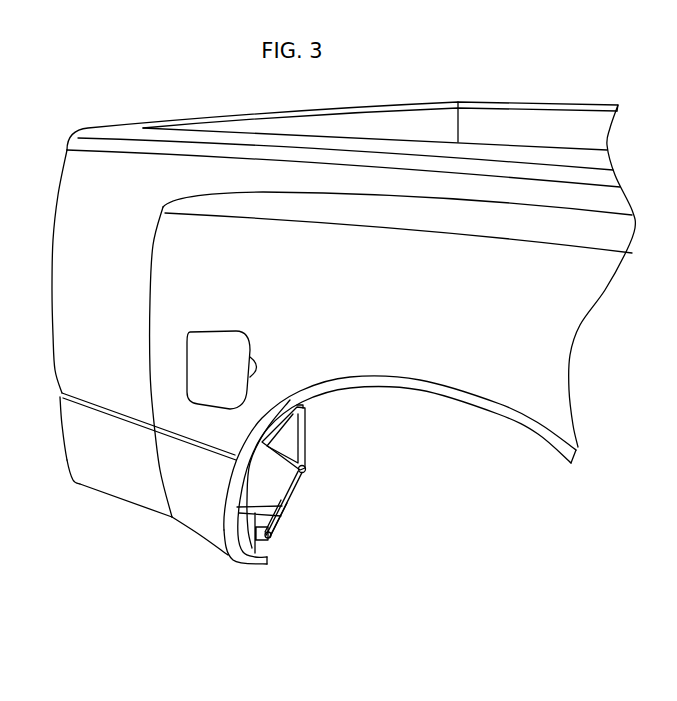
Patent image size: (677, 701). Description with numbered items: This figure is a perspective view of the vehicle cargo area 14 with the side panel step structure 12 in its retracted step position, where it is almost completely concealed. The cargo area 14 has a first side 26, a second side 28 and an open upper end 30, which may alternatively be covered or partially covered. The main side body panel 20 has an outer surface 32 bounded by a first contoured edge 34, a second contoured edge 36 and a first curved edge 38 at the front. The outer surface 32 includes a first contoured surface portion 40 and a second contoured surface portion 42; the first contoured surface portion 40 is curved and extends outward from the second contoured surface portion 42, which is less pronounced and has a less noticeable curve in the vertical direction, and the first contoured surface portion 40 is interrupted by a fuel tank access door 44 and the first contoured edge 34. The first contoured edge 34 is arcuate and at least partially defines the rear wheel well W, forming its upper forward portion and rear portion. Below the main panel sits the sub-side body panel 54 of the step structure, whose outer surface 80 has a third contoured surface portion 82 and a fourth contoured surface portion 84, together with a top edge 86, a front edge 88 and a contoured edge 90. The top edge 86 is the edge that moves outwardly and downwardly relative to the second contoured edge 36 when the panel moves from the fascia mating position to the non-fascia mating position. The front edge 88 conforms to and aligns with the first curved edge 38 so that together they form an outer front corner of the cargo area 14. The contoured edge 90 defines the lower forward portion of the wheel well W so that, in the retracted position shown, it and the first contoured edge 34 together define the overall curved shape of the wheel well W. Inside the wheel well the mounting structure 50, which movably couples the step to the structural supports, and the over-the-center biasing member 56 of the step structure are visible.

The side panel step structure 12 is at (194, 516).
The cargo area 14 is at (538, 120).
The main side body panel 20 is at (177, 177).
The first side 26 is at (385, 160).
The second side 28 is at (590, 128).
The open upper end 30 is at (492, 125).
The outer surface 32 is at (468, 340).
The first contoured edge 34 is at (331, 387).
The second contoured edge 36 is at (102, 407).
The first curved edge 38 is at (53, 230).
The first contoured surface portion 40 is at (395, 358).
The second contoured surface portion 42 is at (108, 175).
The fuel tank access door 44 is at (215, 357).
The mounting structure 50 is at (326, 455).
The sub-side body panel 54 is at (213, 482).
The over-the-center biasing member 56 is at (292, 497).
The outer surface 80 is at (130, 490).
The third contoured surface portion 82 is at (214, 527).
The fourth contoured surface portion 84 is at (108, 448).
The top edge 86 is at (123, 407).
The front edge 88 is at (67, 466).
The contoured edge 90 is at (278, 508).
The rear wheel well W is at (507, 423).